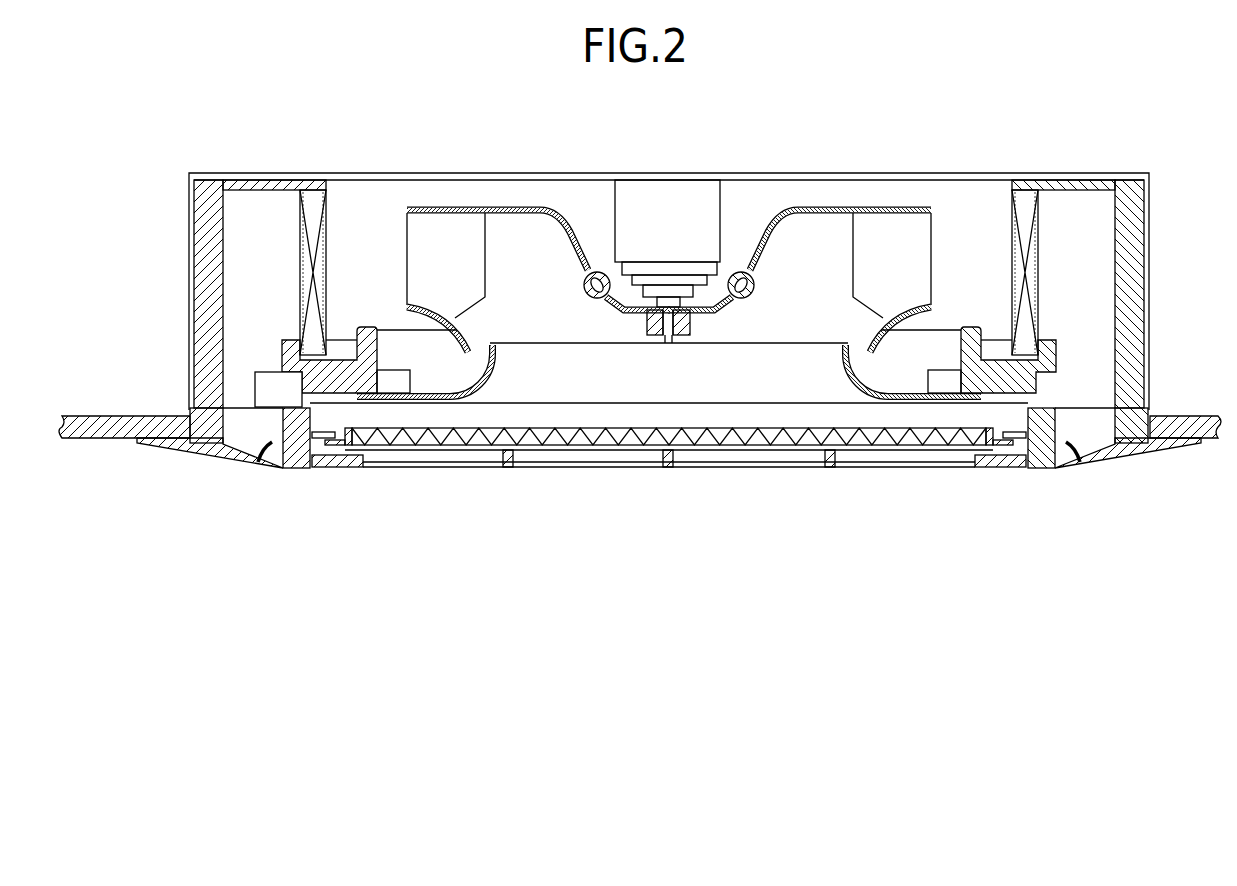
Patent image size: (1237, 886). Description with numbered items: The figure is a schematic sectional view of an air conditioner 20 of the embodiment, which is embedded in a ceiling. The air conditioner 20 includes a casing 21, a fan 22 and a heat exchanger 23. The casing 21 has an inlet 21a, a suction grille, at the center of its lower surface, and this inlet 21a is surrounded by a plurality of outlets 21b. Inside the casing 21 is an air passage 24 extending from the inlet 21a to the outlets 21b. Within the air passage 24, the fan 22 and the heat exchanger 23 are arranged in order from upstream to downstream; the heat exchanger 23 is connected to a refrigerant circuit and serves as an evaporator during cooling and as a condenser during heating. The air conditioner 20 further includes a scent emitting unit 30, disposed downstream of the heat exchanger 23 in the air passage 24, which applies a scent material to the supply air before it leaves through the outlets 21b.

The air conditioner 20 is at (335, 147).
The casing 21 is at (309, 470).
The inlet 21a is at (624, 470).
The outlets 21b is at (220, 468).
The fan 22 is at (762, 207).
The heat exchanger 23 is at (327, 270).
The air passage 24 is at (382, 218).
The scent emitting unit 30 is at (268, 370).